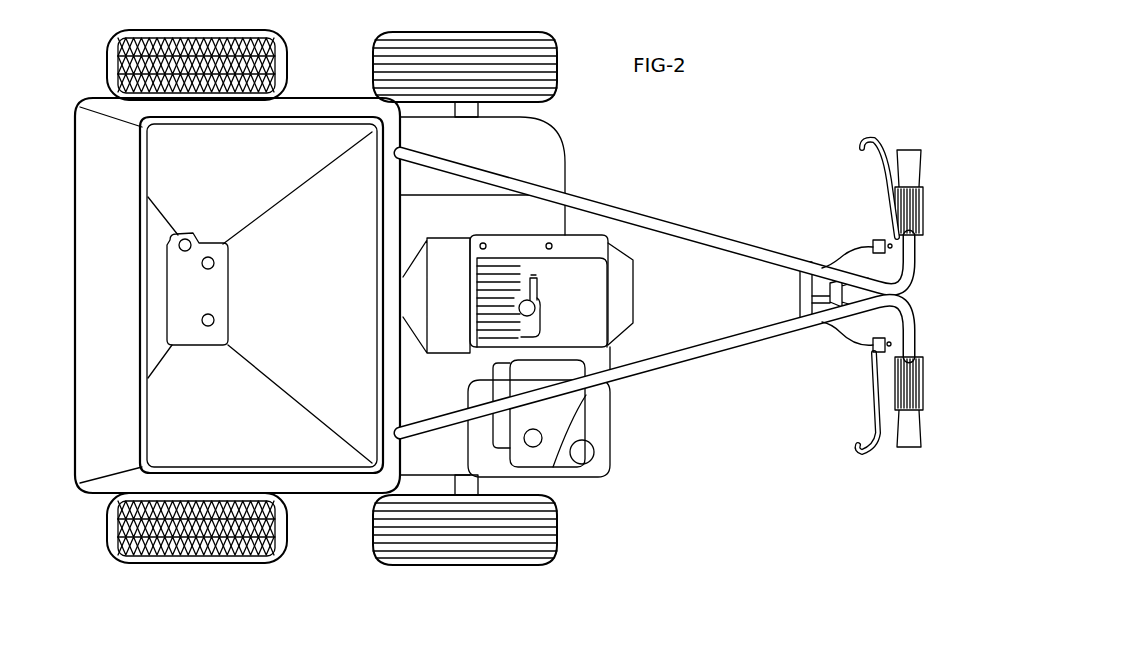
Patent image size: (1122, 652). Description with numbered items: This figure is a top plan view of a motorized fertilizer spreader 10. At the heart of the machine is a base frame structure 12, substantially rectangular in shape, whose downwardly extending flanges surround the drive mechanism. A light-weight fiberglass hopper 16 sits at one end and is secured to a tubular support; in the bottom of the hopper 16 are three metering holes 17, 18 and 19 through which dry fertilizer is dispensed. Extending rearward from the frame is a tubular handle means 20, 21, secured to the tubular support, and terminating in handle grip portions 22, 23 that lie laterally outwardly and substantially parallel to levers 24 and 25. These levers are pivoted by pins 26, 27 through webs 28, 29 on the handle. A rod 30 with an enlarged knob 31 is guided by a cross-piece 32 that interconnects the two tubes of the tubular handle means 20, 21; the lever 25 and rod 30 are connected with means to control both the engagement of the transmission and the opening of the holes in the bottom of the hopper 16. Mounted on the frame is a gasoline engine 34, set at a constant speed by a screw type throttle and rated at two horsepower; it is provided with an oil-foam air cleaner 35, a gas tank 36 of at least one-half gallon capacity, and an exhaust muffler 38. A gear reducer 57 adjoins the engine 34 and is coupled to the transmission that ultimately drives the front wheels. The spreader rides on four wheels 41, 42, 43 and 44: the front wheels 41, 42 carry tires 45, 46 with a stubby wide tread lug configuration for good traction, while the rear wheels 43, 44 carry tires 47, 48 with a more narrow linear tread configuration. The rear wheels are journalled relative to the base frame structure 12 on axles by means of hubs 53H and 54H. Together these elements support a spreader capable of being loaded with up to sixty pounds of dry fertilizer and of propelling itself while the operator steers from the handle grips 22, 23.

The motorized fertilizer spreader 10 is at (658, 143).
The base frame structure 12 is at (85, 295).
The hopper 16 is at (307, 108).
The metering hole 17 is at (215, 320).
The metering hole 18 is at (215, 263).
The metering hole 19 is at (187, 243).
The tubular handle means 20 is at (690, 360).
The tubular handle means 21 is at (688, 222).
The handle grip portion 22 is at (908, 450).
The handle grip portion 23 is at (906, 152).
The lever 24 is at (874, 388).
The lever 25 is at (872, 167).
The pin 26 is at (873, 348).
The pin 27 is at (882, 248).
The web 28 is at (906, 336).
The web 29 is at (907, 270).
The rod 30 is at (686, 318).
The enlarged knob 31 is at (830, 300).
The cross-piece 32 is at (805, 268).
The gasoline engine 34 is at (515, 282).
The oil-foam air cleaner 35 is at (556, 415).
The gas tank 36 is at (602, 438).
The exhaust muffler 38 is at (497, 428).
The wheel 41 is at (214, 565).
The wheel 42 is at (212, 16).
The wheel 43 is at (482, 564).
The wheel 44 is at (470, 34).
The tire 45 is at (110, 530).
The tire 46 is at (106, 62).
The tire 47 is at (560, 522).
The tire 48 is at (557, 55).
The hub 53H is at (480, 484).
The hub 54H is at (470, 108).
The gear reducer 57 is at (446, 240).